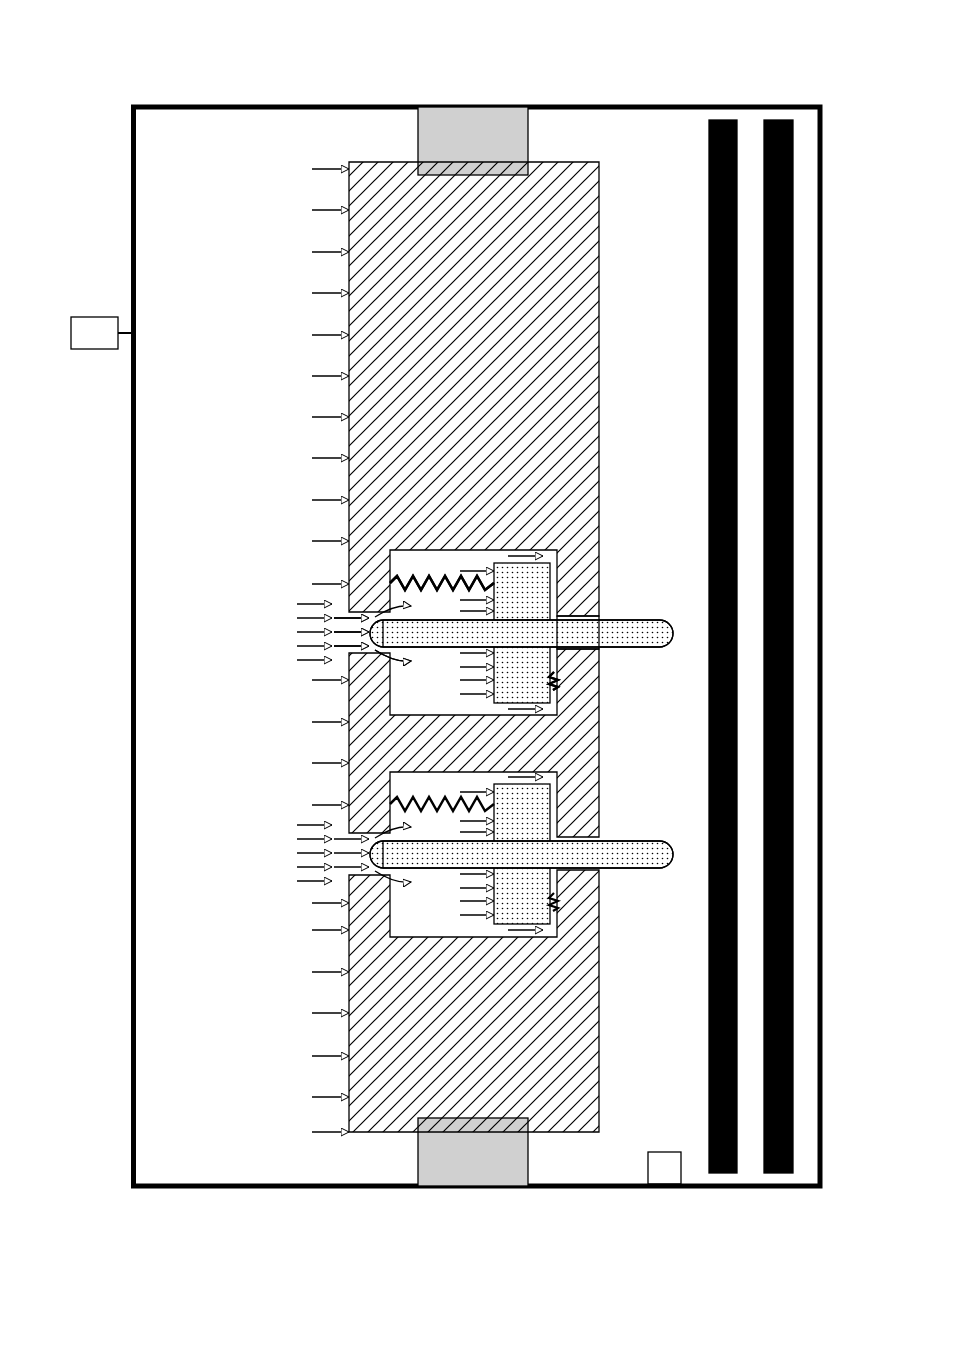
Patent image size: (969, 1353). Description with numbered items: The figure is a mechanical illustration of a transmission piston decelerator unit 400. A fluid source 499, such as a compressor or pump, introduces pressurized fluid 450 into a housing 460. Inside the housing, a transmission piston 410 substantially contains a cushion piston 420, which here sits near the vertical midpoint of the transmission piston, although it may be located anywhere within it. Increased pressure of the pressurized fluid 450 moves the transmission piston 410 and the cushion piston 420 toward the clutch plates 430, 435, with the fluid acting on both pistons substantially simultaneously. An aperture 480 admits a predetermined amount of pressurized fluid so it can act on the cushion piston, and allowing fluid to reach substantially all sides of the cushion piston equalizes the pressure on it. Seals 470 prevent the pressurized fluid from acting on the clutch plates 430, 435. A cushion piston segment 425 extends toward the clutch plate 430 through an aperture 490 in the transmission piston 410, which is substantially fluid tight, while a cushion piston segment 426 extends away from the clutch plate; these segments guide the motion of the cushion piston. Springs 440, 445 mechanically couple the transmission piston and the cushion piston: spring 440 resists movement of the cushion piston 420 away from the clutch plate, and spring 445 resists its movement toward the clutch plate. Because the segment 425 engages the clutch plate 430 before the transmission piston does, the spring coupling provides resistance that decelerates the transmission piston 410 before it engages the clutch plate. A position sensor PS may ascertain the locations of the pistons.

The transmission piston decelerator unit 400 is at (74, 90).
The transmission piston 410 is at (603, 357).
The cushion piston 420 is at (549, 576).
The cushion piston segment 425 is at (490, 579).
The cushion piston segment 426 is at (404, 660).
The clutch plate 430 is at (706, 201).
The clutch plate 435 is at (796, 243).
The spring 440 is at (384, 578).
The spring 445 is at (562, 688).
The pressurized fluid 450 is at (306, 336).
The housing 460 is at (137, 216).
The seal 470 is at (531, 137).
The aperture 480 is at (423, 641).
The aperture 490 is at (601, 617).
The fluid source 499 is at (102, 333).